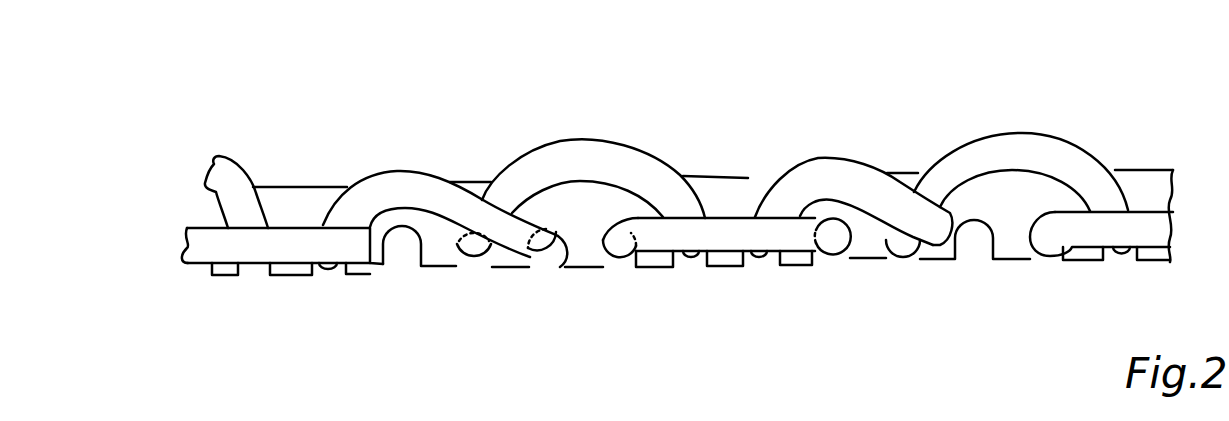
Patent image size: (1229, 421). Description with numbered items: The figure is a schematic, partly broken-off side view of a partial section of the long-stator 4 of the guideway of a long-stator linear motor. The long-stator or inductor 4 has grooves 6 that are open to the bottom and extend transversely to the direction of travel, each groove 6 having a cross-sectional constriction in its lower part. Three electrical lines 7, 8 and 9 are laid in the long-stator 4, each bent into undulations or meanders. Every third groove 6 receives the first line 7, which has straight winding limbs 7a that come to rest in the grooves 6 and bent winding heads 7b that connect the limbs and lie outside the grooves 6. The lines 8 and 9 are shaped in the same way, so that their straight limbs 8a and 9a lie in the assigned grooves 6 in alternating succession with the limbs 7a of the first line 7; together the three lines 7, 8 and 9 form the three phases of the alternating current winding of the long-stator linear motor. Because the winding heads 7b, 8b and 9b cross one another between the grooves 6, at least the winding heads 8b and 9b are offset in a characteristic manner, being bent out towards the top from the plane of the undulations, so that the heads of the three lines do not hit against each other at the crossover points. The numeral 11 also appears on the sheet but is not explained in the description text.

The long-stator 4 is at (288, 177).
The groove 6 is at (400, 250).
The electrical line 7 is at (727, 212).
The winding limb 7a is at (622, 250).
The winding head 7b is at (253, 248).
The electrical line 8 is at (576, 142).
The winding limb 8a is at (473, 252).
The winding head 8b is at (655, 174).
The electrical line 9 is at (377, 170).
The winding limb 9a is at (547, 250).
The winding head 9b is at (397, 192).
The sheet 11 is at (1099, 406).